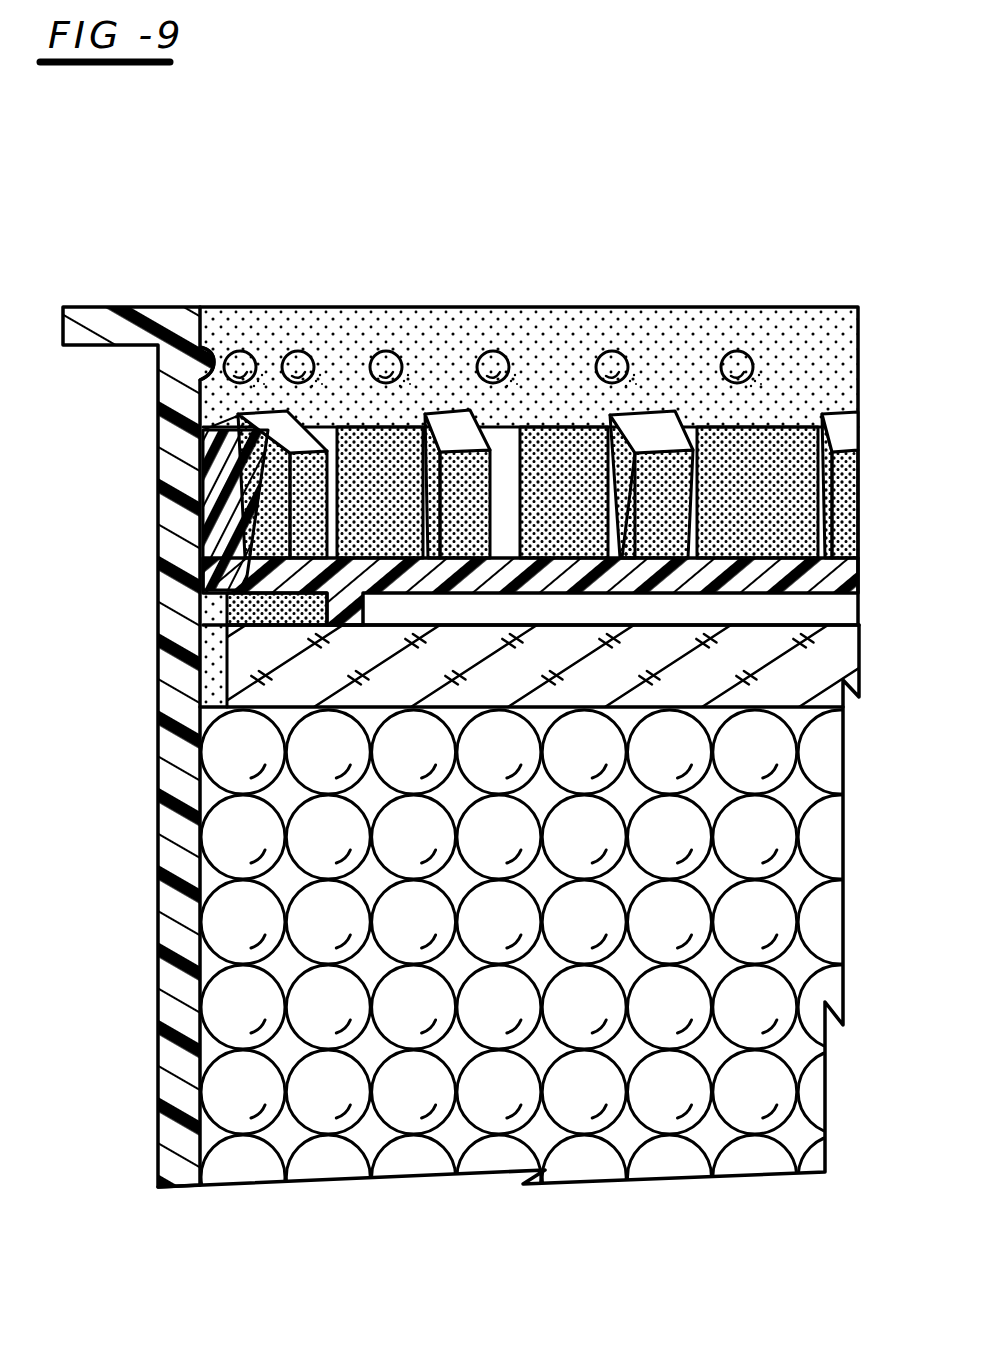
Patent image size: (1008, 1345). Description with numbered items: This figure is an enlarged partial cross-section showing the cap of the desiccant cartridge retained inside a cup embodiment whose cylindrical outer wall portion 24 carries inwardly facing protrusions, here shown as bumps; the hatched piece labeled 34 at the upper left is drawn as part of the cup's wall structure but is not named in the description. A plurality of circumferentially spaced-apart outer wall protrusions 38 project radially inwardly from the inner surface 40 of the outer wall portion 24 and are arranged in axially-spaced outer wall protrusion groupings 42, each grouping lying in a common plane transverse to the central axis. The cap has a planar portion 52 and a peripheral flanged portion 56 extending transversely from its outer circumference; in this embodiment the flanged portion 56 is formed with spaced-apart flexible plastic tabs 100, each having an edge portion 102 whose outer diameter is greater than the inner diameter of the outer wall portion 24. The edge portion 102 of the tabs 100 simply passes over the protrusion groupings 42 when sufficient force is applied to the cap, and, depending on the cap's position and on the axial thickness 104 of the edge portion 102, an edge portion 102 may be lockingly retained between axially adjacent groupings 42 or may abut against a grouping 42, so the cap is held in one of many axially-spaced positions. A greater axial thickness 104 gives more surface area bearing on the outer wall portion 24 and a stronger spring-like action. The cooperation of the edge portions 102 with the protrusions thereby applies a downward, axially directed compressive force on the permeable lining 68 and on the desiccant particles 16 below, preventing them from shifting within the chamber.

The desiccant particles 16 is at (757, 1007).
The outer wall portion 24 is at (143, 707).
The top flange 34 is at (112, 320).
The outer wall protrusions 38 is at (612, 358).
The inner surface 40 is at (205, 307).
The outer wall protrusion groupings 42 is at (143, 707).
The planar portion 52 is at (210, 628).
The peripheral flanged portion 56 is at (223, 522).
The lining material 68 is at (850, 648).
The tabs 100 is at (457, 453).
The edge portion 102 is at (205, 433).
The axial thickness 104 is at (222, 478).